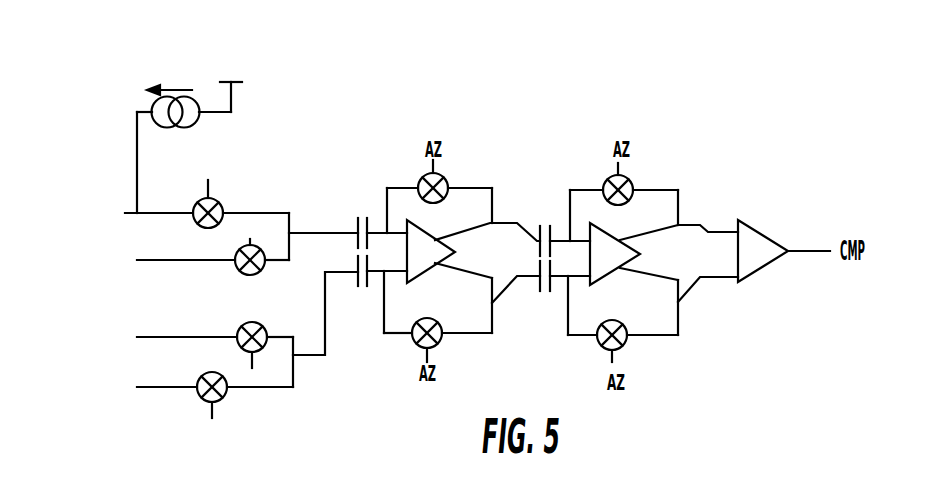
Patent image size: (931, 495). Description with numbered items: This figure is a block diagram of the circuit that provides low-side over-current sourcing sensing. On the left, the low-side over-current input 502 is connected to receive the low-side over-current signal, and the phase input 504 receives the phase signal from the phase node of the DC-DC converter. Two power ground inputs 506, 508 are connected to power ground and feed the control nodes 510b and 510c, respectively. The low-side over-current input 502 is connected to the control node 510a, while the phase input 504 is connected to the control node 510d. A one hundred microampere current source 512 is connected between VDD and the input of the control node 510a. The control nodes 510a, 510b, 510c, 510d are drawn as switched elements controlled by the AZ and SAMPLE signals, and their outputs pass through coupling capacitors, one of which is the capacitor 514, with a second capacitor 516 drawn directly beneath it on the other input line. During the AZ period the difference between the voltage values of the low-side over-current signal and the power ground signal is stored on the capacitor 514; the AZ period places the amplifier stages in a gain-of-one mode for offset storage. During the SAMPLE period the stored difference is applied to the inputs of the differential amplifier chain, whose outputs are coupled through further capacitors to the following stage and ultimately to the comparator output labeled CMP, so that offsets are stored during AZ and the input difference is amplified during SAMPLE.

The low-side over-current input 502 is at (118, 208).
The phase input 504 is at (85, 378).
The power ground input 506 is at (85, 334).
The power ground input 508 is at (85, 272).
The control node 510a is at (219, 201).
The control node 510b is at (248, 277).
The control node 510c is at (250, 322).
The control node 510d is at (226, 396).
The current source 512 is at (192, 124).
The capacitor 514 is at (355, 228).
The capacitor 516 is at (355, 268).